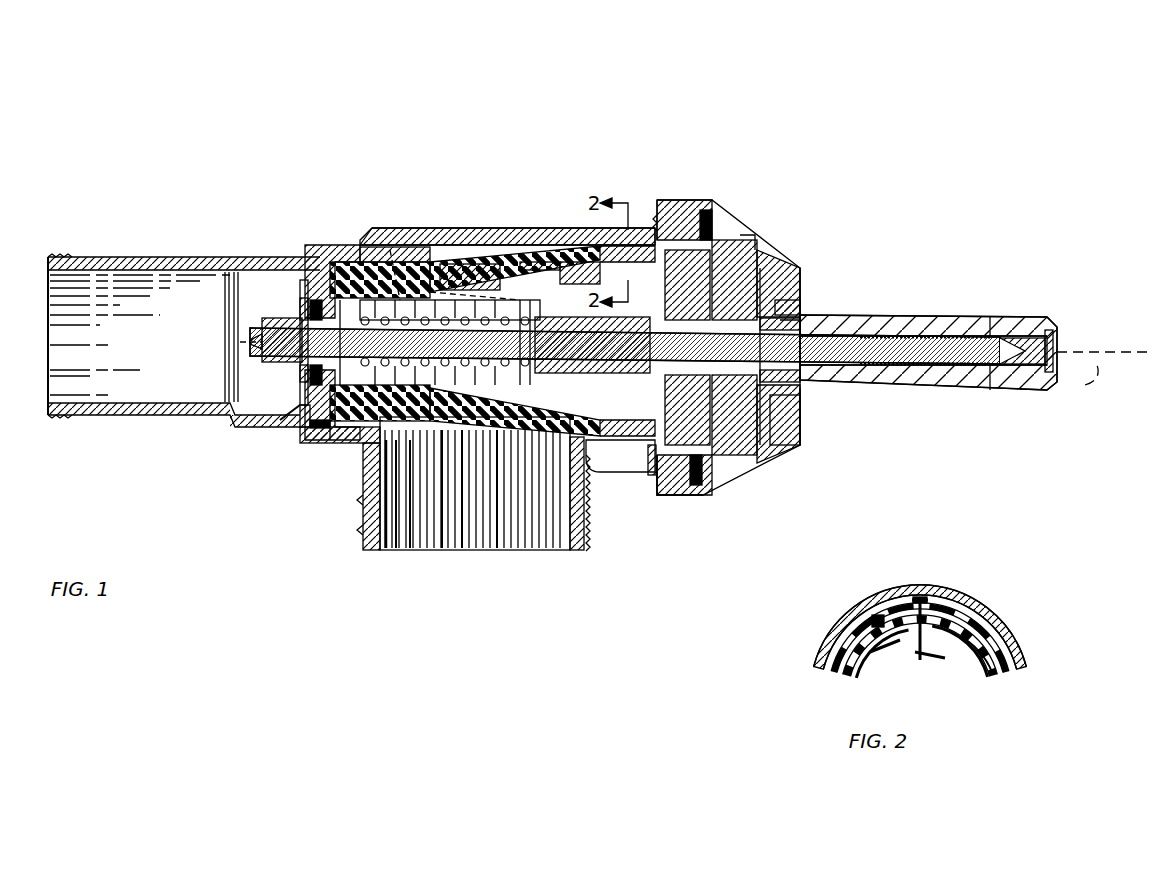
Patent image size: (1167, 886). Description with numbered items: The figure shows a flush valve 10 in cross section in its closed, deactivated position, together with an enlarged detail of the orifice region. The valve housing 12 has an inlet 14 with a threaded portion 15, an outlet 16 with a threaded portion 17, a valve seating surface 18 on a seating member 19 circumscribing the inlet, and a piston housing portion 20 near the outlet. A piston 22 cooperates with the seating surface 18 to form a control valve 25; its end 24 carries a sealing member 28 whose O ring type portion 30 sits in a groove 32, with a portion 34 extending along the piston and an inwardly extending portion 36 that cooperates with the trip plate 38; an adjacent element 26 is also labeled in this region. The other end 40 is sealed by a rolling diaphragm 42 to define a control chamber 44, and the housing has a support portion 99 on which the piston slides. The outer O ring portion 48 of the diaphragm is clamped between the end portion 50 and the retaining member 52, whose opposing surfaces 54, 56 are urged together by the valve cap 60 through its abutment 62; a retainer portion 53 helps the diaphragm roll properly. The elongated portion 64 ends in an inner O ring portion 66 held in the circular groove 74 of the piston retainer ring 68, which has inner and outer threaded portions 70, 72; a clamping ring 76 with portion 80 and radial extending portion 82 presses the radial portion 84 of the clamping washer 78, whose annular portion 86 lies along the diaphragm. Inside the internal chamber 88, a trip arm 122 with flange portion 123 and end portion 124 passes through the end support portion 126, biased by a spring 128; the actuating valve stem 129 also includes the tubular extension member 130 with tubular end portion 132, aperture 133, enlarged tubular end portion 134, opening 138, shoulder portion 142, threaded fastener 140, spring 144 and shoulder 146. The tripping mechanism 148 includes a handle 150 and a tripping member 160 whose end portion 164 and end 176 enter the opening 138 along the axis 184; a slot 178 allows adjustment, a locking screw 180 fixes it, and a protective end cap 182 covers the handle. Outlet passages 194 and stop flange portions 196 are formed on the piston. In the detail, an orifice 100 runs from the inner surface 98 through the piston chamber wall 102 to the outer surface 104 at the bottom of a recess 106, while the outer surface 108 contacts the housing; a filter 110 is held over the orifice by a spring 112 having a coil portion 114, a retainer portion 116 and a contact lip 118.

In FIG. 1, the flush valve 10 is at (190, 92).
In FIG. 1, the valve housing 12 is at (96, 250).
In FIG. 1, the inlet 14 is at (95, 417).
In FIG. 1, the threaded portion 15 is at (60, 418).
In FIG. 1, the outlet 16 is at (362, 512).
In FIG. 1, the threaded portion 17 is at (363, 530).
In FIG. 1, the valve seating surface 18 is at (316, 412).
In FIG. 1, the seating member 19 is at (330, 422).
In FIG. 1, the piston housing portion 20 is at (560, 228).
In FIG. 1, the piston 22 is at (447, 242).
In FIG. 1, the end 24 is at (325, 255).
In FIG. 1, the control valve 25 is at (292, 422).
In FIG. 1, the sleeve 26 is at (322, 252).
In FIG. 1, the sealing member 28 is at (345, 422).
In FIG. 1, the O ring type portion 30 is at (300, 248).
In FIG. 1, the groove 32 is at (290, 252).
In FIG. 1, the portion 34 is at (300, 432).
In FIG. 1, the inwardly extending portion 36 is at (228, 427).
In FIG. 1, the trip plate 38 is at (190, 257).
In FIG. 1, the other end 40 is at (620, 462).
In FIG. 1, the rolling diaphragm 42 is at (742, 490).
In FIG. 1, the control chamber 44 is at (545, 440).
In FIG. 1, the outer O ring portion 48 is at (697, 470).
In FIG. 1, the end portion 50 is at (658, 245).
In FIG. 1, the retaining member 52 is at (713, 245).
In FIG. 1, the retainer portion 53 is at (652, 237).
In FIG. 1, the opposing surface 54 is at (672, 250).
In FIG. 1, the opposing surface 56 is at (700, 235).
In FIG. 1, the valve cap 60 is at (762, 268).
In FIG. 1, the abutment 62 is at (736, 250).
In FIG. 1, the elongated portion 64 is at (722, 485).
In FIG. 1, the inner O ring portion 66 is at (790, 300).
In FIG. 1, the piston retainer ring 68 is at (760, 455).
In FIG. 1, the inner threaded portion 70 is at (594, 480).
In FIG. 1, the outer threaded portion 72 is at (642, 462).
In FIG. 1, the circular groove 74 is at (800, 382).
In FIG. 1, the clamping ring 76 is at (790, 368).
In FIG. 1, the clamping washer 78 is at (760, 252).
In FIG. 1, the portion 80 is at (795, 330).
In FIG. 1, the radial extending portion 82 is at (810, 402).
In FIG. 1, the radial portion 84 is at (795, 440).
In FIG. 1, the annular portion 86 is at (742, 470).
In FIG. 1, the internal chamber 88 is at (492, 230).
In FIG. 1, the support portion 99 is at (560, 500).
In FIG. 1, the trip arm 122 is at (368, 250).
In FIG. 1, the flange portion 123 is at (338, 250).
In FIG. 1, the end portion 124 is at (426, 255).
In FIG. 1, the end support portion 126 is at (225, 257).
In FIG. 1, the spring 128 is at (285, 255).
In FIG. 1, the actuating valve stem 129 is at (416, 232).
In FIG. 1, the tubular extension member 130 is at (390, 440).
In FIG. 1, the tubular end portion 132 is at (395, 450).
In FIG. 1, the aperture 133 is at (438, 240).
In FIG. 1, the enlarged tubular end portion 134 is at (462, 450).
In FIG. 1, the opening 138 is at (531, 230).
In FIG. 1, the threaded fastener 140 is at (502, 230).
In FIG. 1, the shoulder portion 142 is at (496, 420).
In FIG. 1, the spring 144 is at (363, 470).
In FIG. 1, the shoulder 146 is at (442, 430).
In FIG. 1, the tripping mechanism 148 is at (862, 272).
In FIG. 1, the handle 150 is at (1000, 318).
In FIG. 1, the tripping member 160 is at (810, 345).
In FIG. 1, the end portion 164 is at (575, 374).
In FIG. 1, the end 176 is at (540, 362).
In FIG. 1, the slot 178 is at (975, 335).
In FIG. 1, the locking screw 180 is at (1022, 340).
In FIG. 1, the protective end cap 182 is at (1060, 350).
In FIG. 1, the axis 184 is at (1082, 385).
In FIG. 1, the outlet passages 194 is at (395, 245).
In FIG. 1, the stop flange portions 196 is at (412, 460).
In FIG. 2, the inner surface 98 is at (990, 658).
In FIG. 2, the orifice 100 is at (876, 610).
In FIG. 2, the piston chamber wall 102 is at (1000, 650).
In FIG. 2, the outer surface 104 is at (990, 615).
In FIG. 2, the recess 106 is at (1025, 620).
In FIG. 2, the outer surface 108 is at (1030, 655).
In FIG. 2, the filter 110 is at (960, 615).
In FIG. 2, the spring 112 is at (932, 656).
In FIG. 2, the coil portion 114 is at (885, 645).
In FIG. 2, the retainer portion 116 is at (923, 600).
In FIG. 2, the contact lip 118 is at (900, 600).